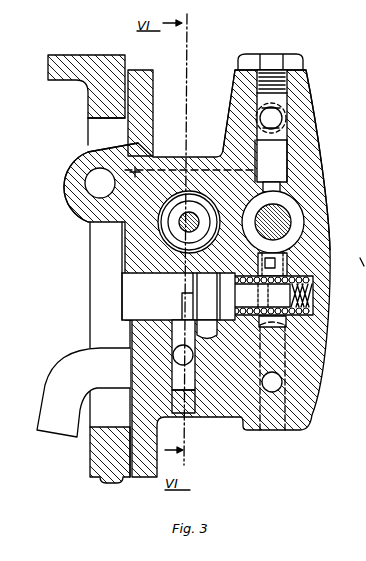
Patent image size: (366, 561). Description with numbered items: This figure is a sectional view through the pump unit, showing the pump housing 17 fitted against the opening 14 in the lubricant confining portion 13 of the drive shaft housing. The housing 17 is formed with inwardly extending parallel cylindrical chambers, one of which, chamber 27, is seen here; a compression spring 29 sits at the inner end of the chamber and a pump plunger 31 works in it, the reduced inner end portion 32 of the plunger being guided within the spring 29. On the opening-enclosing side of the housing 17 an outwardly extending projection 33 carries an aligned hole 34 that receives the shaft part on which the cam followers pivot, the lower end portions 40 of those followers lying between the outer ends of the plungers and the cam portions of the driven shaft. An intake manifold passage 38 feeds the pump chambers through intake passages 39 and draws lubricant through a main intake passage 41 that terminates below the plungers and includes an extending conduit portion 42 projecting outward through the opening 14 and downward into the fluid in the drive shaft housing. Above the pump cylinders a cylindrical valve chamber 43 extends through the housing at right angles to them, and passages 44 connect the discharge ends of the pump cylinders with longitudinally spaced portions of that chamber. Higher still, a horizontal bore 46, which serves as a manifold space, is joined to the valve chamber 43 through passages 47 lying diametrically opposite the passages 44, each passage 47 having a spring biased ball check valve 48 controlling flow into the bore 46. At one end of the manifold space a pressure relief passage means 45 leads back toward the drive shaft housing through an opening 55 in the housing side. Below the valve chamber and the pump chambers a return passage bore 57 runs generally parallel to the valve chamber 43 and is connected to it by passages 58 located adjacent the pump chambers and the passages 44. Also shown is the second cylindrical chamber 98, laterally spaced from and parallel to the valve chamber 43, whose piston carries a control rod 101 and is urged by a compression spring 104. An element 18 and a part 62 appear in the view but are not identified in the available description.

The lubricant confining portion 13 is at (96, 56).
The opening 14 is at (105, 130).
The pump housing 17 is at (317, 124).
The spacer member 18 is at (143, 71).
The cylindrical chamber 27 is at (128, 270).
The compression spring 29 is at (322, 310).
The pump plunger 31 is at (127, 305).
The reduced inner end portion 32 is at (250, 320).
The outwardly extending projections 33 is at (80, 153).
The aligned holes 34 is at (85, 184).
The intake manifold passage 38 is at (173, 360).
The intake passages 39 is at (173, 337).
The lower end portions 40 is at (358, 249).
The main intake passage 41 is at (152, 390).
The extending conduit portion 42 is at (50, 384).
The cylindrical valve chamber 43 is at (300, 213).
The passages 44 is at (314, 268).
The pressure relief passage means 45 is at (226, 165).
The horizontal bore 46 is at (283, 118).
The passages 47 is at (255, 142).
The spring biased ball check valve 48 is at (283, 162).
The opening 55 is at (134, 168).
The bore 57 is at (282, 382).
The passages 58 is at (260, 358).
The shaft 62 is at (189, 222).
The second cylindrical chamber 98 is at (165, 207).
The control rod 101 is at (213, 246).
The compression spring 104 is at (217, 207).